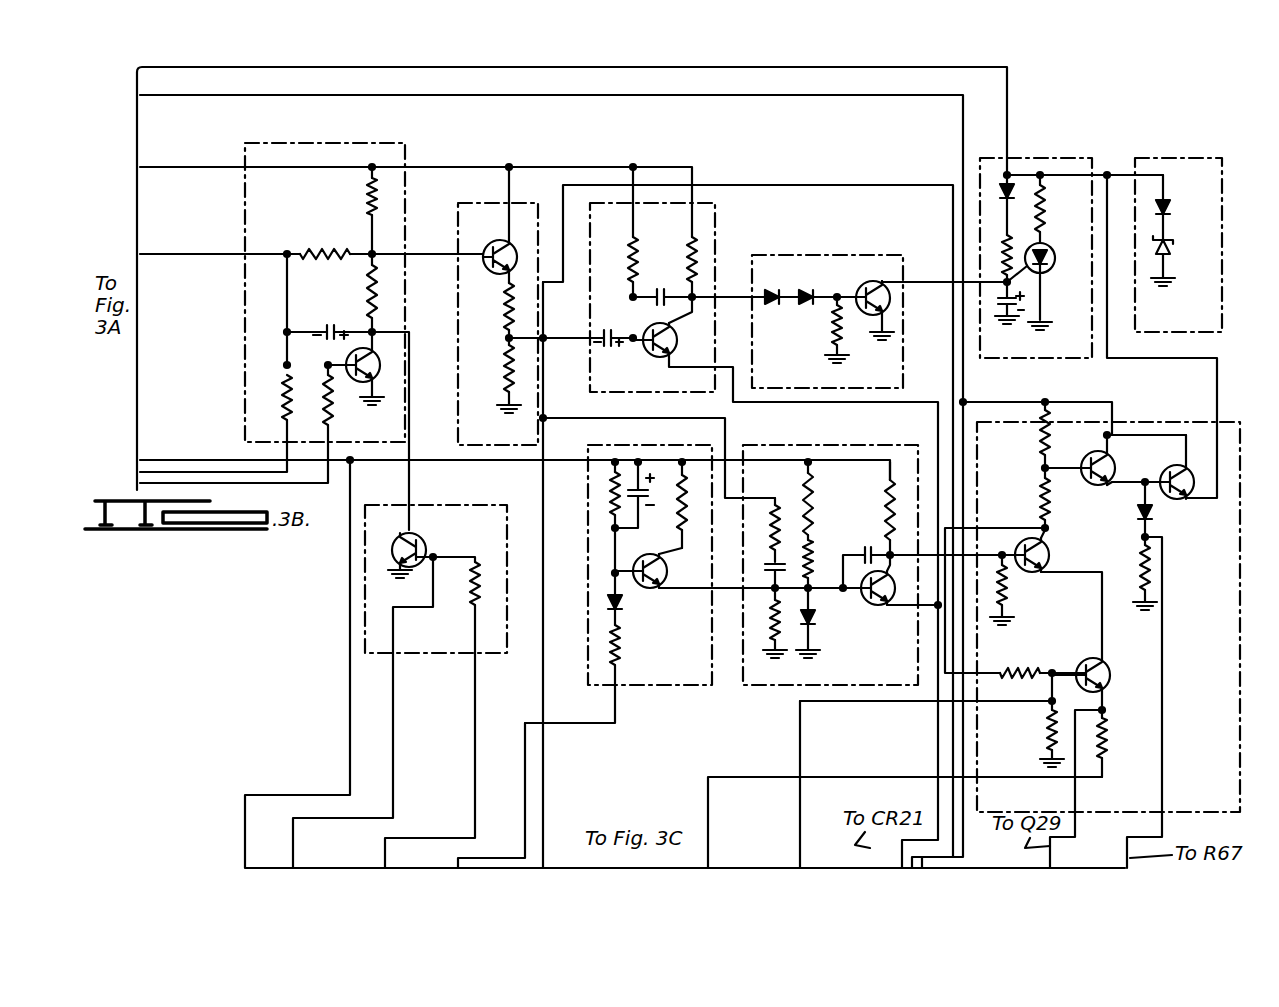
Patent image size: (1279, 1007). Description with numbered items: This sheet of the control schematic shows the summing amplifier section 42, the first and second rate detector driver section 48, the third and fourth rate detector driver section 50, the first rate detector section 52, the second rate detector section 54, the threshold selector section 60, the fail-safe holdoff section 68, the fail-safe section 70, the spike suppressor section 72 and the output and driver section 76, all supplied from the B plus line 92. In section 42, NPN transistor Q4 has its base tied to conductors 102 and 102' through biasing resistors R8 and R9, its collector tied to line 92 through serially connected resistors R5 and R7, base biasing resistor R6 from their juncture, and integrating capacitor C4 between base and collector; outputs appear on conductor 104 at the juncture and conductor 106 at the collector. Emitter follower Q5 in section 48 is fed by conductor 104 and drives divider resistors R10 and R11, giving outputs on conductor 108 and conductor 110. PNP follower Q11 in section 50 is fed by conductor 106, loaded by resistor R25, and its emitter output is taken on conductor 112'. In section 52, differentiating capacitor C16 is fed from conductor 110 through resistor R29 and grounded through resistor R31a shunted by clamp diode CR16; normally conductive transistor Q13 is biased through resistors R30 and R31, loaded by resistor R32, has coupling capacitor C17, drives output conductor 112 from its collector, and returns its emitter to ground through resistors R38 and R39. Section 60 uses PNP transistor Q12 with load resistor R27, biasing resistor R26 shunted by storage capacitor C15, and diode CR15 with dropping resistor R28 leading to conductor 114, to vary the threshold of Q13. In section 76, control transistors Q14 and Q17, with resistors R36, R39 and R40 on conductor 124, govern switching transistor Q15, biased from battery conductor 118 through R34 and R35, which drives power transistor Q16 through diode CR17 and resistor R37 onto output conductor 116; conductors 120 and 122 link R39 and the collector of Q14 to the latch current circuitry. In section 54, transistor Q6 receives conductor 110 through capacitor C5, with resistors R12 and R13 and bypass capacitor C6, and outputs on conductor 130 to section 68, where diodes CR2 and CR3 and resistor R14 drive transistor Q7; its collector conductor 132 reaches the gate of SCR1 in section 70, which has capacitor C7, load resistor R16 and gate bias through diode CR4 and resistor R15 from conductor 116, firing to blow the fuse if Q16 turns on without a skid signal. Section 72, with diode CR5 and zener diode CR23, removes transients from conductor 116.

The summing amplifier section 42 is at (380, 140).
The first and second rate detector driver section 48 is at (483, 200).
The third and fourth rate detector driver section 50 is at (480, 503).
The first rate detector section 52 is at (775, 686).
The second rate detector section 54 is at (716, 209).
The threshold selector section 60 is at (655, 686).
The fail-safe holdoff section 68 is at (848, 254).
The fail-safe section 70 is at (1082, 156).
The spike suppressor section 72 is at (1168, 156).
The output and driver section 76 is at (1190, 420).
The B plus line 92 is at (210, 165).
The conductor 102 is at (213, 440).
The conductor 102' is at (234, 454).
The conductor 104 is at (425, 252).
The conductor 106 is at (413, 447).
The conductor 108 is at (560, 284).
The conductor 110 is at (578, 336).
The output conductor 112 is at (922, 555).
The signal line 112' is at (367, 712).
The conductor 114 is at (527, 772).
The output conductor 116 is at (187, 73).
The conductor 118 is at (182, 102).
The output conductor 120 is at (798, 815).
The conductor 122 is at (940, 725).
The conductor 124 is at (706, 795).
The output conductor 130 is at (725, 296).
The conductor 132 is at (924, 280).
The resistor R5 is at (366, 192).
The base biasing resistor R6 is at (330, 248).
The resistor R7 is at (365, 288).
The biasing resistor R8 is at (285, 378).
The biasing resistor R9 is at (326, 400).
The resistor R10 is at (504, 300).
The resistor R11 is at (504, 352).
The biasing resistor R12 is at (628, 240).
The load resistor R13 is at (688, 242).
The biasing resistor R14 is at (832, 316).
The resistor R15 is at (1040, 240).
The load resistor R16 is at (1045, 202).
The load resistor R25 is at (470, 598).
The biasing resistor R26 is at (612, 480).
The load resistor R27 is at (680, 520).
The dropping resistor R28 is at (622, 650).
The resistor R29 is at (814, 540).
The resistor R30 is at (805, 490).
The resistor R31 is at (783, 540).
The resistor R31a is at (773, 640).
The load resistor R32 is at (886, 490).
The biasing resistor R34 is at (1040, 438).
The resistor R35 is at (1040, 500).
The resistor R36 is at (1010, 590).
The resistor R37 is at (1152, 568).
The resistor R38 is at (1028, 668).
The load resistor R39 is at (1045, 718).
The resistor R40 is at (1106, 758).
The capacitor C4 is at (336, 320).
The differentiating capacitor C5 is at (606, 328).
The bypass capacitor C6 is at (656, 290).
The capacitor C7 is at (996, 300).
The capacitor C15 is at (648, 480).
The differentiating capacitor C16 is at (765, 566).
The coupling capacitor C17 is at (868, 545).
The NPN transistor Q4 is at (380, 366).
The NPN transistor Q5 is at (490, 252).
The NPN transistor Q6 is at (648, 360).
The NPN transistor Q7 is at (872, 270).
The PNP transistor Q11 is at (425, 545).
The PNP transistor Q12 is at (662, 590).
The NPN transistor Q13 is at (888, 612).
The control transistor Q14 is at (1050, 548).
The switching transistor Q15 is at (1090, 452).
The power transistor Q16 is at (1168, 476).
The second control transistor Q17 is at (1104, 680).
The diode CR2 is at (772, 288).
The diode CR3 is at (806, 290).
The diode CR4 is at (1012, 185).
The diode CR5 is at (1172, 210).
The diode CR15 is at (622, 605).
The diode CR16 is at (816, 622).
The diode CR17 is at (1136, 512).
The zener diode CR23 is at (1170, 258).
The SCR SCR1 is at (1052, 280).